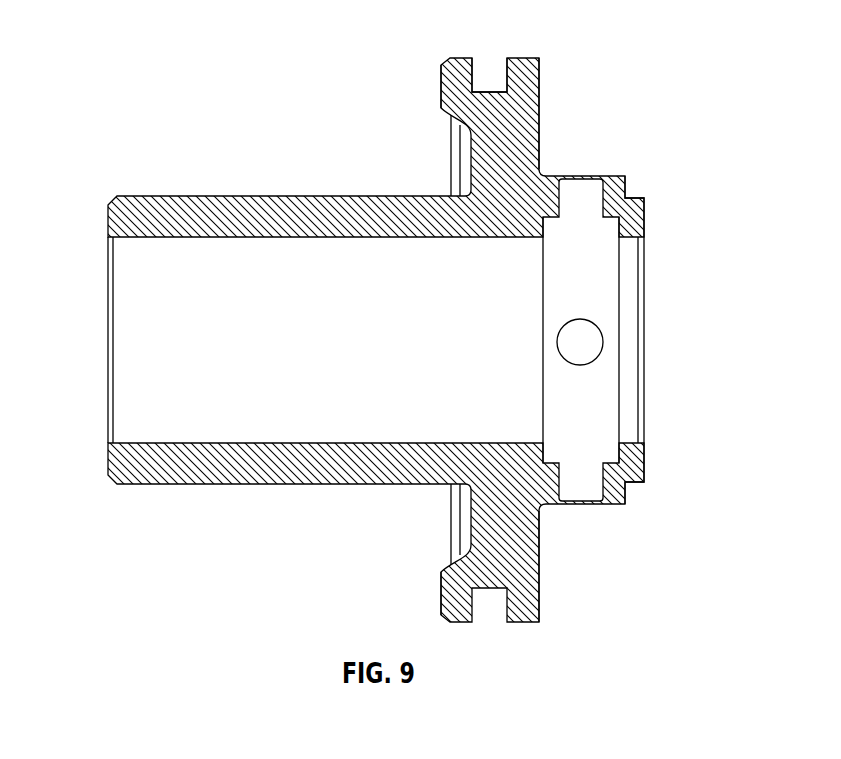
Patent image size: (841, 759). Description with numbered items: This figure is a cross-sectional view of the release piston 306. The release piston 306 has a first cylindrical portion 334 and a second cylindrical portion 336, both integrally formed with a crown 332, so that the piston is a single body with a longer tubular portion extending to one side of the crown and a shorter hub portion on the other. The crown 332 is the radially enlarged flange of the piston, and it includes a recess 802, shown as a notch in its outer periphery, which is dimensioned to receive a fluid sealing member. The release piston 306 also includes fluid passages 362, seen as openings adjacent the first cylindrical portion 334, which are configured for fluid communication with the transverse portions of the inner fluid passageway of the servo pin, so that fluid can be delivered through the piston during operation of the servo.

The release piston 306 is at (376, 340).
The second cylindrical portion 336 is at (173, 203).
The crown 332 is at (518, 137).
The first cylindrical portion 334 is at (637, 222).
The fluid passages 362 is at (578, 495).
The recess 802 is at (491, 75).